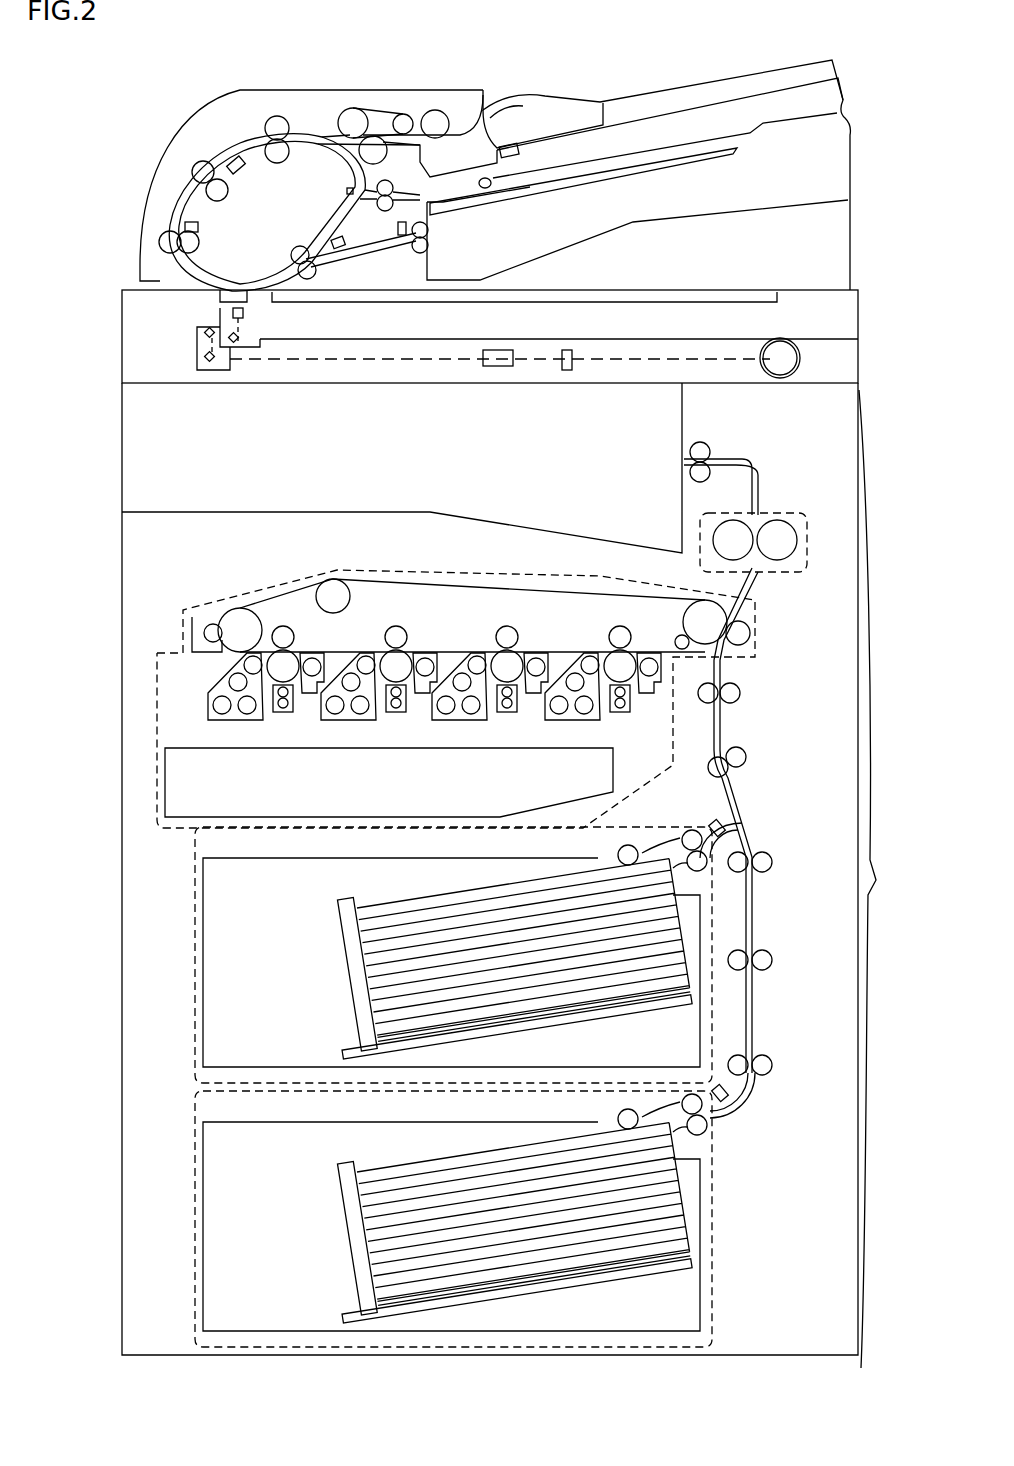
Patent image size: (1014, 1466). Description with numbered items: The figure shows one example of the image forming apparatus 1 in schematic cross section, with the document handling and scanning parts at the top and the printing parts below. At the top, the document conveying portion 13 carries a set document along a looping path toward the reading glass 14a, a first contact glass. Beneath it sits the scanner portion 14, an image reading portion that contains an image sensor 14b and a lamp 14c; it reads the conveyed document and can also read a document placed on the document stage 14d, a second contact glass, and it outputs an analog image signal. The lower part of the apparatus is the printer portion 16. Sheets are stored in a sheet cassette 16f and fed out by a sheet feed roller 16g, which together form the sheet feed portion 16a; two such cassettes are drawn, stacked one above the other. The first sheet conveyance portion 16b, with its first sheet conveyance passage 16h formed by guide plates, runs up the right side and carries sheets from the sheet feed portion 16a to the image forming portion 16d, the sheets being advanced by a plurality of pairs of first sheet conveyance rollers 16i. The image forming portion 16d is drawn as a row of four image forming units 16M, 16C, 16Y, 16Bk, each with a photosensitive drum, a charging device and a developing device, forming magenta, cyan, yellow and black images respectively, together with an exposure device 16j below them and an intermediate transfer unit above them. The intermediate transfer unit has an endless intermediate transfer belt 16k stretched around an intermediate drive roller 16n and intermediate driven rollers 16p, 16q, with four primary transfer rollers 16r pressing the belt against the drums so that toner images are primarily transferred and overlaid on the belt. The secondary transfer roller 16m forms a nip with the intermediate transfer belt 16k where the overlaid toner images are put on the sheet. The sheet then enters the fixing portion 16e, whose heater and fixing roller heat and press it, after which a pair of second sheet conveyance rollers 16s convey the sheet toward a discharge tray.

The image forming apparatus 1 is at (480, 714).
The document conveying portion 13 is at (182, 162).
The scanner portion 14 is at (466, 308).
The reading glass 14a is at (232, 288).
The image sensor 14b is at (568, 349).
The lamp 14c is at (245, 313).
The document stage 14d is at (718, 300).
The printer portion 16 is at (480, 875).
The sheet feed portion 16a is at (194, 973).
The first sheet conveyance portion 16b is at (731, 786).
The image forming portion 16d is at (436, 697).
The fixing portion 16e is at (697, 513).
The sheet cassette 16f is at (700, 932).
The sheet feed roller 16g is at (630, 853).
The first sheet conveyance passage 16h is at (728, 727).
The pairs of first sheet conveyance rollers 16i is at (740, 692).
The exposure device 16j is at (175, 810).
The intermediate transfer belt 16k is at (459, 584).
The secondary transfer roller 16m is at (748, 633).
The intermediate drive roller 16n is at (698, 612).
The intermediate driven roller 16p is at (330, 592).
The intermediate driven roller 16q is at (240, 622).
The primary transfer rollers 16r is at (290, 637).
The pair of second sheet conveyance rollers 16s is at (700, 450).
The image forming unit 16M is at (238, 730).
The image forming unit 16C is at (353, 730).
The image forming unit 16Y is at (470, 730).
The image forming unit 16Bk is at (582, 730).